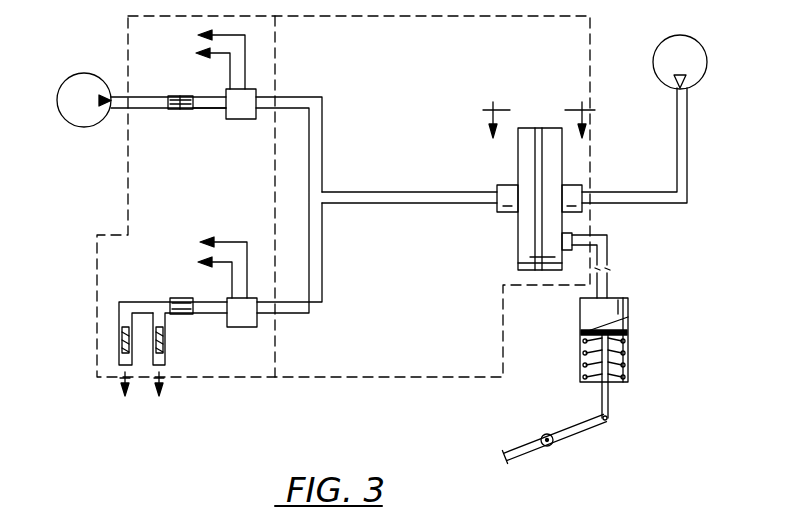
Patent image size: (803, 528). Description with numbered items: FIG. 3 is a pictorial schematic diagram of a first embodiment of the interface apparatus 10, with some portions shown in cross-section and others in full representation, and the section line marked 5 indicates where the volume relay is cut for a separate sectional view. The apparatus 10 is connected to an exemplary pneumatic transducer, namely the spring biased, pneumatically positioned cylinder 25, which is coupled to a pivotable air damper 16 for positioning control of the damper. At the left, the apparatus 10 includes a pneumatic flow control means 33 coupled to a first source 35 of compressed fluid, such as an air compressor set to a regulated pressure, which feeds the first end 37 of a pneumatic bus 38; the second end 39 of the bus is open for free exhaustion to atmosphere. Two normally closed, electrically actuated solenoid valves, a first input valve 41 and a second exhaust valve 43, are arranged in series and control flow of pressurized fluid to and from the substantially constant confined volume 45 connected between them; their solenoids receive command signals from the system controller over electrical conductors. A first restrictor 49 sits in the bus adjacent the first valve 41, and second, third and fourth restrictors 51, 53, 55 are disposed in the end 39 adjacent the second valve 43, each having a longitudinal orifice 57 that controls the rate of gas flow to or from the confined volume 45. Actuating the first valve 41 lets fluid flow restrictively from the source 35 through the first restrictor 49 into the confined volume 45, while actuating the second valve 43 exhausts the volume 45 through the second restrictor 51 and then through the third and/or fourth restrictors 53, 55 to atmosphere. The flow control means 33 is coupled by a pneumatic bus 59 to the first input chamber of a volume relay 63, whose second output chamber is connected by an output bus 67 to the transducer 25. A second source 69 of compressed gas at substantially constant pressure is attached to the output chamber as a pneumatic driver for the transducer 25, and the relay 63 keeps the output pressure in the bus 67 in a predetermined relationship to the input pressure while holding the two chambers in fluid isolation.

The interface apparatus 10 is at (418, 408).
The pivotable air damper 16 is at (547, 434).
The pneumatically positioned cylinder 25 is at (632, 306).
The pneumatic flow control means 33 is at (208, 193).
The first source of compressed fluid 35 is at (72, 75).
The first end of pneumatic bus 37 is at (114, 96).
The pneumatic bus 38 is at (208, 112).
The second end of pneumatic bus 39 is at (176, 354).
The first input valve 41 is at (258, 90).
The second exhaust valve 43 is at (258, 300).
The confined volume 45 is at (342, 181).
The first restrictor 49 is at (182, 95).
The second restrictor 51 is at (182, 297).
The third restrictor 53 is at (166, 346).
The fourth restrictor 55 is at (118, 339).
The orifice 57 is at (120, 362).
The pneumatic bus 59 is at (430, 206).
The volume relay 63 is at (517, 158).
The output bus 67 is at (609, 246).
The second source of compressed gas 69 is at (670, 36).
The section line 5- 5 is at (530, 120).